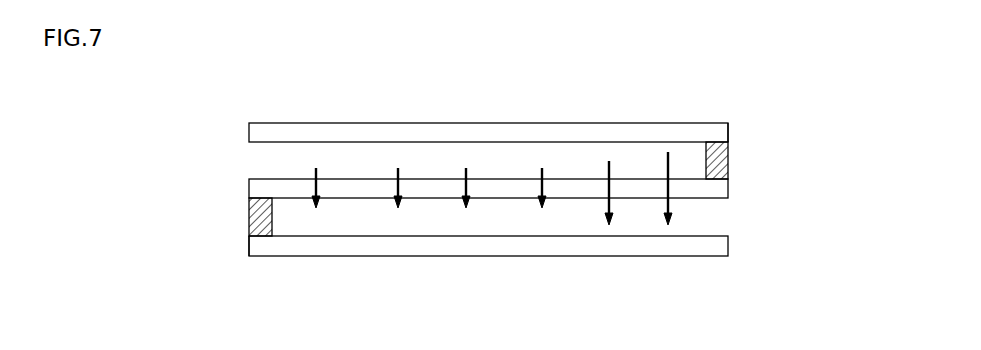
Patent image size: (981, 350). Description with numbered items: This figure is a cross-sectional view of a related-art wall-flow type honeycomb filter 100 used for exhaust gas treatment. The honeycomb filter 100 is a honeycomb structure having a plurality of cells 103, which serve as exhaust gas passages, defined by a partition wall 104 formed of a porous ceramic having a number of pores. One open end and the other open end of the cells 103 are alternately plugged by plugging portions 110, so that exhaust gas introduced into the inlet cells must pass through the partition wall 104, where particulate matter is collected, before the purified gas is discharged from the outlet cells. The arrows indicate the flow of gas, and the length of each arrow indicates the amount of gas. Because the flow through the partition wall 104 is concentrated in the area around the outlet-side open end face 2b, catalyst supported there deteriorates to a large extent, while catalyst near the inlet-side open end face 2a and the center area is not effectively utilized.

The honeycomb filter 100 is at (231, 101).
The partition wall 104 is at (325, 132).
The cells 103 is at (429, 215).
The plugging portions 110 is at (729, 160).
The inlet-side open end face 2a is at (249, 238).
The outlet-side open end face 2b is at (729, 128).